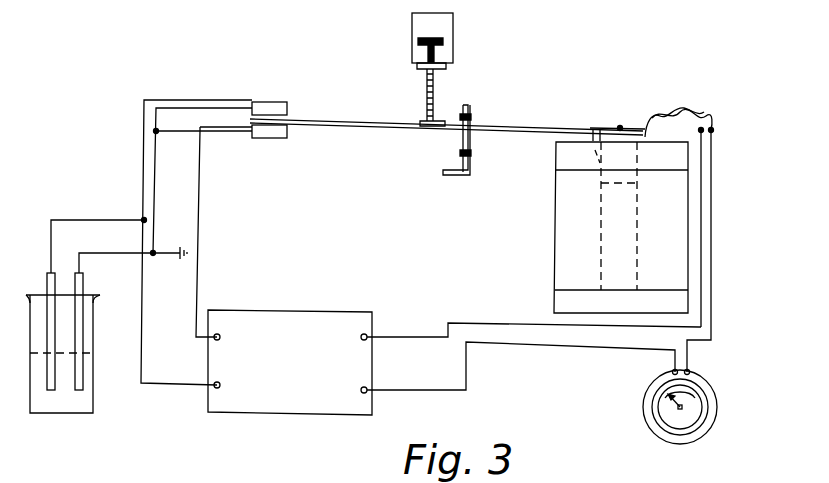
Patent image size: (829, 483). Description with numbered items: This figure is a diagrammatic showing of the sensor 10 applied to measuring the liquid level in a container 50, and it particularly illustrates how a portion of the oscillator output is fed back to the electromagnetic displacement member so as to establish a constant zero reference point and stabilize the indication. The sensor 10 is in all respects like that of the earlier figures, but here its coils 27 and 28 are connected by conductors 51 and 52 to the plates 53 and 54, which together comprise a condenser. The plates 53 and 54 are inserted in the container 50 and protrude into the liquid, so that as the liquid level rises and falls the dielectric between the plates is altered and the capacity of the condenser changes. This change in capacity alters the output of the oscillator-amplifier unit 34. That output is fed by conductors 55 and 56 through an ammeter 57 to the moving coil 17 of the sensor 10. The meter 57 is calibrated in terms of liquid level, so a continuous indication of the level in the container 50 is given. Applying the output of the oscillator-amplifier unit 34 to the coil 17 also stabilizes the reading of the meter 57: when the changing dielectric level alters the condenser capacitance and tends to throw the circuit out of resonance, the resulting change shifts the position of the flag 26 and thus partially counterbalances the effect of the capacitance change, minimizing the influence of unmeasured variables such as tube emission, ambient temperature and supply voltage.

The sensor 10 is at (493, 108).
The moving coil 17 is at (599, 114).
The flag 26 is at (285, 121).
The coil 27 is at (287, 103).
The coil 28 is at (283, 138).
The oscillator-amplifier unit 34 is at (283, 310).
The container 50 is at (103, 332).
The conductor 51 is at (61, 221).
The conductor 52 is at (97, 236).
The plate 53 is at (44, 287).
The plate 54 is at (84, 287).
The conductor 55 is at (472, 318).
The conductor 56 is at (519, 345).
The ammeter 57 is at (703, 393).